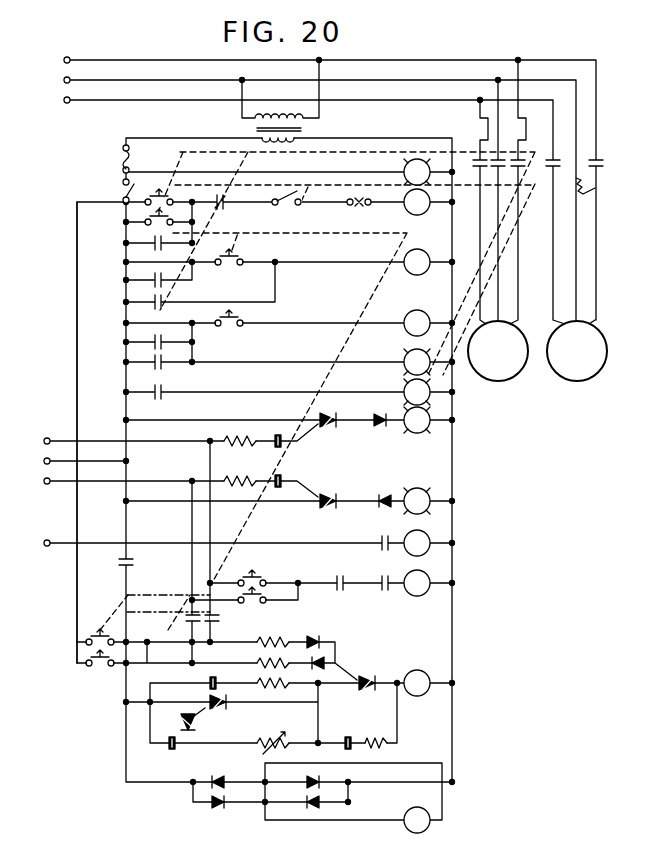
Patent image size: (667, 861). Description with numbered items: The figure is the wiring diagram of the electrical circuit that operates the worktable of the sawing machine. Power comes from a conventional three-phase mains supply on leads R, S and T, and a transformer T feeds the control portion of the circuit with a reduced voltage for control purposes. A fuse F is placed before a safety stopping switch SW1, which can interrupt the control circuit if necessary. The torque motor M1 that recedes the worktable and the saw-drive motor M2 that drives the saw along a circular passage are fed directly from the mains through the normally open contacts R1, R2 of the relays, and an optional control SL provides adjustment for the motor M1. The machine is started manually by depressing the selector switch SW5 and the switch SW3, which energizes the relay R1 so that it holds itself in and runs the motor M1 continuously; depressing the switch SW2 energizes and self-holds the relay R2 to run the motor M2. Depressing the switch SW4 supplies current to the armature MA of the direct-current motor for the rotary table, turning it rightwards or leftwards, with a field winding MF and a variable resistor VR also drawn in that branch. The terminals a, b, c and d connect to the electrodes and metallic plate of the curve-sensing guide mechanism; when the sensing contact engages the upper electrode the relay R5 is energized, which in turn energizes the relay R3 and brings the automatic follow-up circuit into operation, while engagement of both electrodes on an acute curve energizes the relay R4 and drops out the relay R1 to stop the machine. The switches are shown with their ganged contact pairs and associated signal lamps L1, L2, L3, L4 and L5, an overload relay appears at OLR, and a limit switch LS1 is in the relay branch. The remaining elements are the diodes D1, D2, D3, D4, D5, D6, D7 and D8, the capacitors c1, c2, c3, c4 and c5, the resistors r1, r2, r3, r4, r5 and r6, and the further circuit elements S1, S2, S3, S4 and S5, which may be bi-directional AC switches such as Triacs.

The mains supply lead R is at (55, 61).
The mains supply lead S is at (55, 81).
The mains supply lead T / transformer T is at (184, 101).
The fuse F is at (116, 159).
The safety stopping switch SW1 is at (101, 189).
The switch SW2 is at (160, 187).
The switch SW3 is at (70, 434).
The switch SW4 is at (267, 281).
The selector switch SW5 is at (274, 580).
The relay R1 is at (110, 250).
The relay R2 is at (110, 287).
The relay R3 is at (110, 351).
The relay R4 is at (322, 375).
The relay R5 is at (110, 378).
The signal lamp L1 is at (417, 172).
The signal lamp L2 is at (417, 362).
The signal lamp L3 is at (417, 392).
The signal lamp L4 is at (417, 420).
The signal lamp L5 is at (417, 501).
The limit switch LS1 is at (295, 198).
The overload relay OLR is at (368, 213).
The torque motor M1 is at (577, 351).
The saw-drive motor M2 is at (498, 351).
The optional control SL is at (596, 186).
The terminal a is at (40, 441).
The terminal b is at (40, 461).
The terminal c is at (40, 481).
The terminal d is at (40, 543).
The resistor r1 is at (240, 432).
The resistor r2 is at (240, 472).
The resistor r3 is at (277, 632).
The resistor r4 is at (257, 661).
The resistor r5 is at (284, 686).
The resistor r6 is at (376, 730).
The variable resistor VR is at (275, 732).
The capacitor c1 is at (274, 433).
The capacitor c2 is at (289, 472).
The capacitor c3 is at (220, 673).
The capacitor c4 is at (178, 754).
The capacitor c5 is at (347, 737).
The bi-directional AC switch S1 is at (334, 416).
The bi-directional AC switch S2 is at (331, 488).
The bi-directional AC switch S3 is at (226, 706).
The bi-directional AC switch S4 is at (364, 677).
The bi-directional AC switch S5 is at (196, 726).
The diode D1 is at (380, 426).
The diode D2 is at (386, 494).
The diode D3 is at (312, 637).
The diode D4 is at (322, 660).
The diode D5 is at (218, 776).
The diode D6 is at (216, 808).
The diode D7 is at (322, 788).
The diode D8 is at (315, 808).
The armature of the DC motor MA is at (417, 683).
The field motor winding MF is at (417, 820).